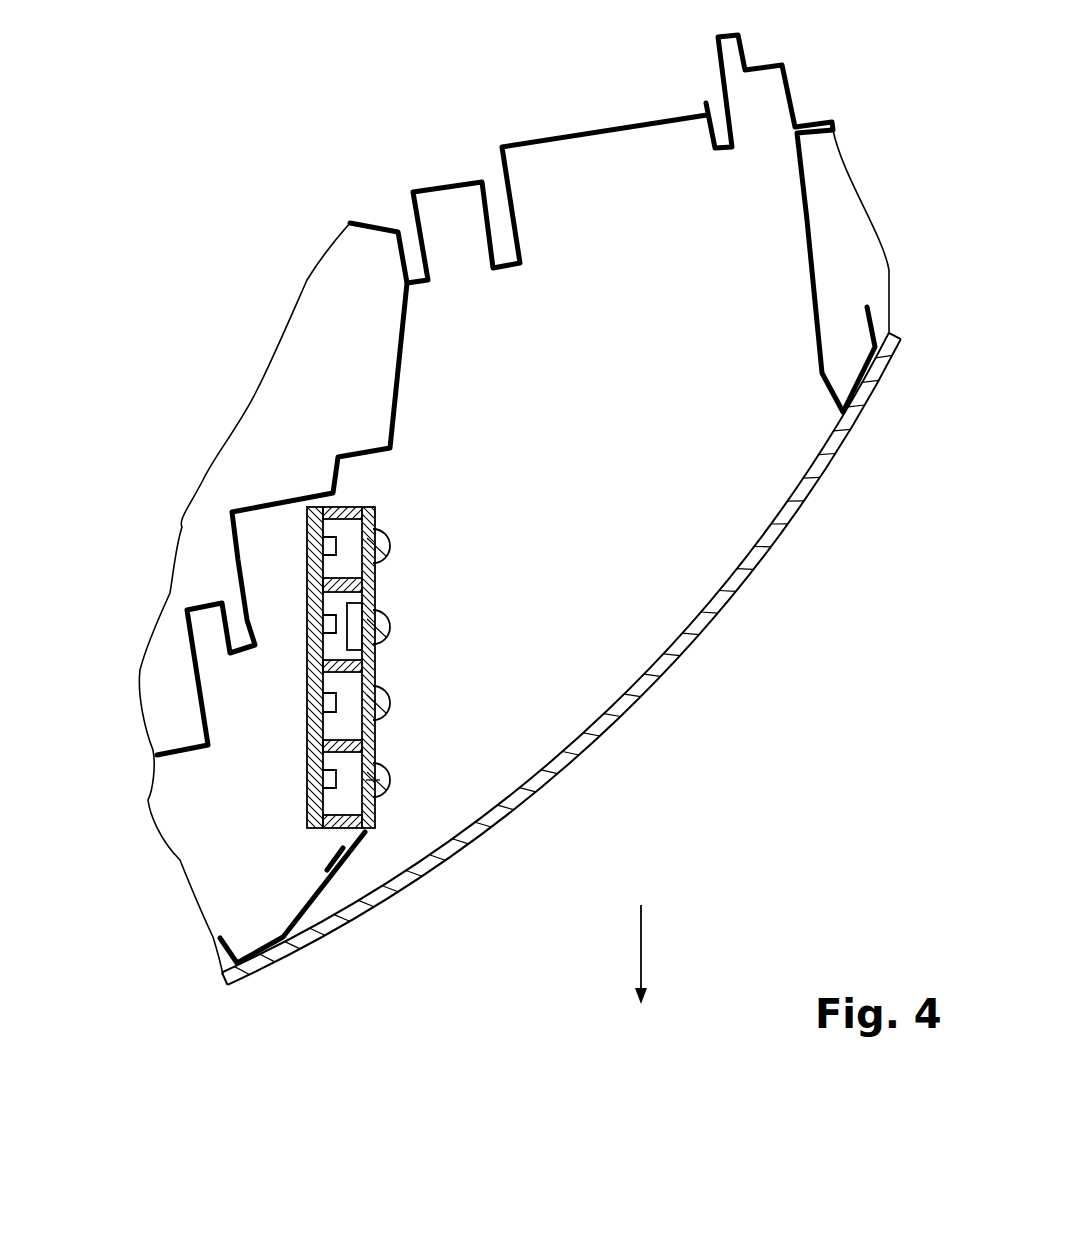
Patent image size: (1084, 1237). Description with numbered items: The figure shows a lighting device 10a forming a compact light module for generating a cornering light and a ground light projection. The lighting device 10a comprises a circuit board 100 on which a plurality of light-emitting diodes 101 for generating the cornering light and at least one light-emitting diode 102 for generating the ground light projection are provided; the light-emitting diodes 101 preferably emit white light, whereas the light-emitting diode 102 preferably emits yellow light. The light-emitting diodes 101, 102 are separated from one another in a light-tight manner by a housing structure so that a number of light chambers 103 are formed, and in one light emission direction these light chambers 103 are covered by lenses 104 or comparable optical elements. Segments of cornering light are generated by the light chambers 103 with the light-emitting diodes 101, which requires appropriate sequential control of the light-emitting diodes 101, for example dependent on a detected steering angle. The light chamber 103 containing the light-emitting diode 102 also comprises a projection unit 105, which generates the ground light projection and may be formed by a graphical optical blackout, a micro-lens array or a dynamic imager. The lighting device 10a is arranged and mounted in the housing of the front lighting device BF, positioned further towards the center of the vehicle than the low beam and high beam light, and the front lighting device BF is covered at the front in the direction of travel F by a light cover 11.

The lighting device 10a is at (480, 516).
The light cover 11 is at (704, 619).
The circuit board 100 is at (320, 753).
The light-emitting diodes 101 is at (325, 546).
The light-emitting diode 102 is at (327, 622).
The light chambers 103 is at (347, 533).
The lenses 104 is at (373, 783).
The projection unit 105 is at (357, 628).
The direction of travel F is at (637, 950).
The front lighting device BF is at (767, 808).